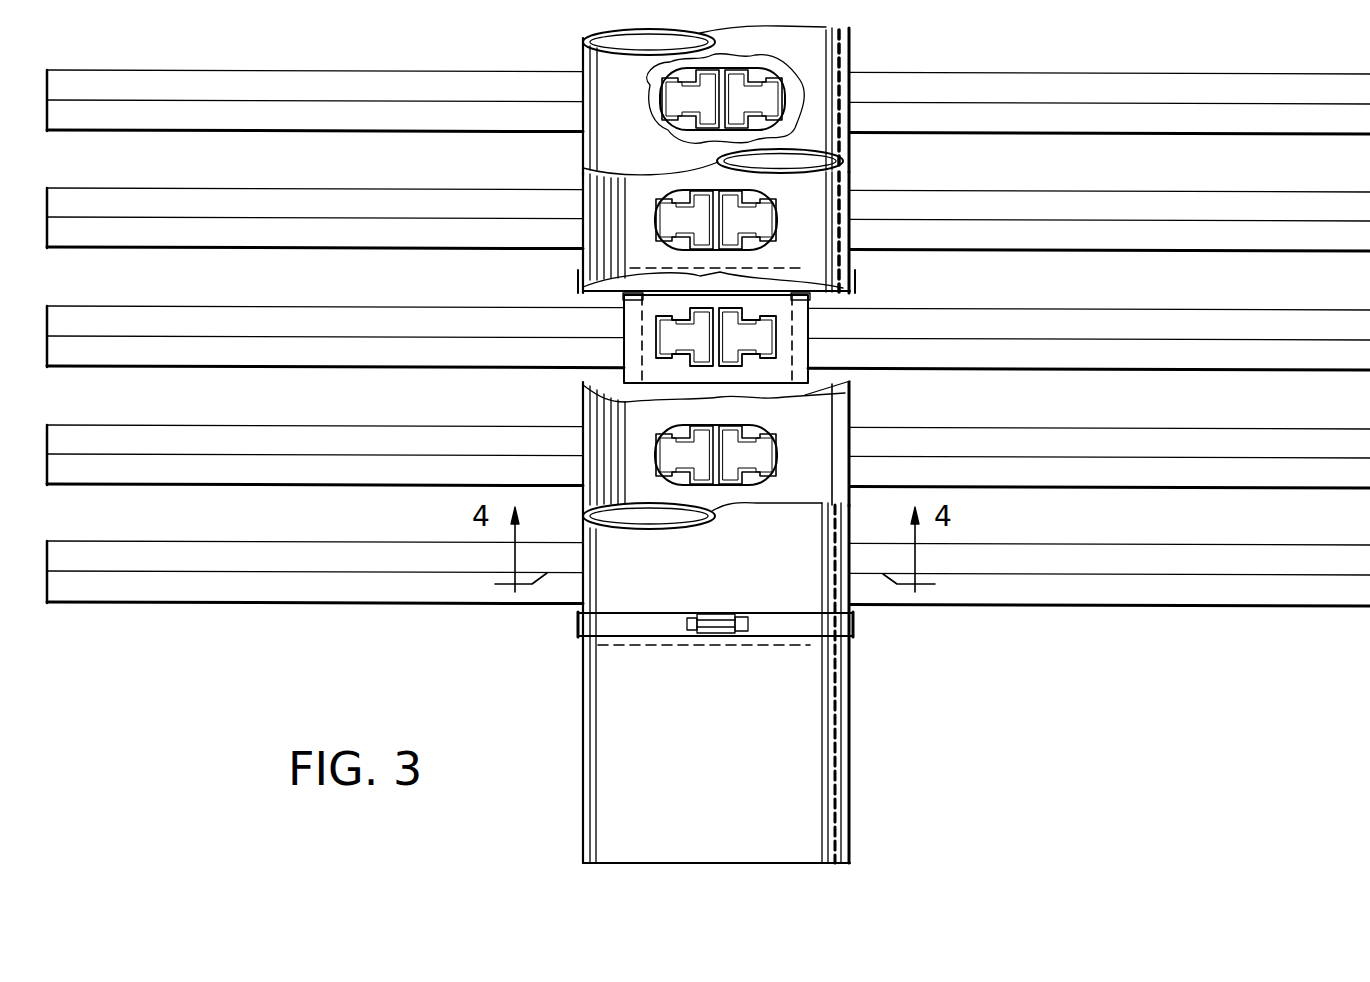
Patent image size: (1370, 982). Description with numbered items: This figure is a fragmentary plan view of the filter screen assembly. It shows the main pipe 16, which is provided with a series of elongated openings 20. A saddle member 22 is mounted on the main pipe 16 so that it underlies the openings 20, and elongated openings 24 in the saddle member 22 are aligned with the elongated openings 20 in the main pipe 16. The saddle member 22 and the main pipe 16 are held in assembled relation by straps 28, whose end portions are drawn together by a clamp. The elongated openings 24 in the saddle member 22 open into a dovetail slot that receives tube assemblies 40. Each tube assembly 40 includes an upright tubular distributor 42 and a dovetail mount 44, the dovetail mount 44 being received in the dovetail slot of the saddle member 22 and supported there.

The main pipe 16 is at (617, 712).
The elongated openings 20 is at (684, 118).
The saddle member 22 is at (710, 450).
The elongated openings 24 is at (674, 478).
The straps 28 is at (852, 283).
The tube assemblies 40 is at (683, 338).
The upright tubular distributor 42 is at (660, 356).
The dovetail mount 44 is at (803, 330).